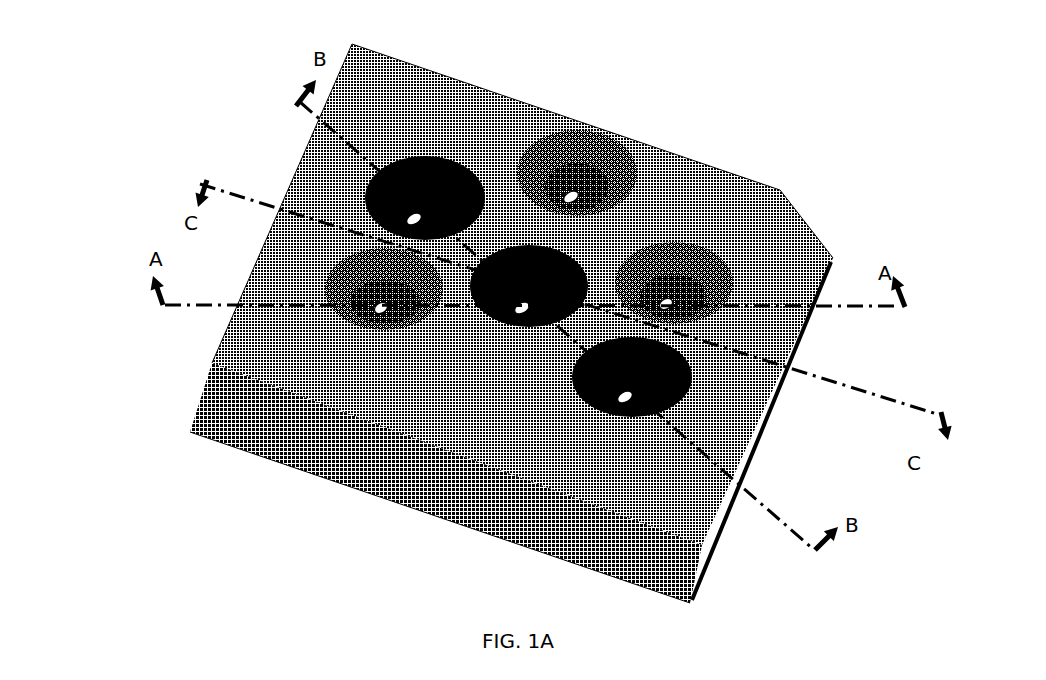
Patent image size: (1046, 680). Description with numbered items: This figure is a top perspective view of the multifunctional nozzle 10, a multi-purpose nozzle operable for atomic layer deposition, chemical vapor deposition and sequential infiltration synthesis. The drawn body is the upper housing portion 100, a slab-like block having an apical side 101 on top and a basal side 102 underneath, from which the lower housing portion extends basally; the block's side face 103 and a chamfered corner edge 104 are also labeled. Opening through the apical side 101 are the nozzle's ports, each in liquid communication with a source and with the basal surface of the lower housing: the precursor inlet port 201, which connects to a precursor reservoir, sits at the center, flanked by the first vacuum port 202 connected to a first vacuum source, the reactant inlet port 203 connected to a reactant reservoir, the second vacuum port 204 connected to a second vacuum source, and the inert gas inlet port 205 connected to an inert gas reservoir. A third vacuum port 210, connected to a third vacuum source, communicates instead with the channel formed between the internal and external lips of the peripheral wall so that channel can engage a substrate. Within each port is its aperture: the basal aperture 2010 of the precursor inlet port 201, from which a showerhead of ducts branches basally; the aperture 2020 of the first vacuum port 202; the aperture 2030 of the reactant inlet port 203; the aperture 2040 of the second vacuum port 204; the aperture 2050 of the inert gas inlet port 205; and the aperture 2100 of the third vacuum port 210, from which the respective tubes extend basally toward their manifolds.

The multifunctional nozzle 10 is at (143, 56).
The upper housing portion 100 is at (673, 181).
The apical side 101 is at (461, 118).
The basal side 102 is at (443, 520).
The side surface of substrate 103 is at (303, 450).
The chamfered edge 104 is at (818, 232).
The precursor inlet port 201 is at (545, 263).
The first vacuum port 202 is at (623, 262).
The reactant inlet port 203 is at (610, 377).
The second vacuum port 204 is at (325, 274).
The inert gas inlet port 205 is at (462, 200).
The third vacuum port 210 is at (610, 205).
The basal aperture 2010 is at (518, 309).
The aperture 2020 is at (669, 302).
The aperture 2030 is at (627, 402).
The aperture 2040 is at (382, 312).
The aperture 2050 is at (440, 200).
The aperture 2100 is at (578, 192).